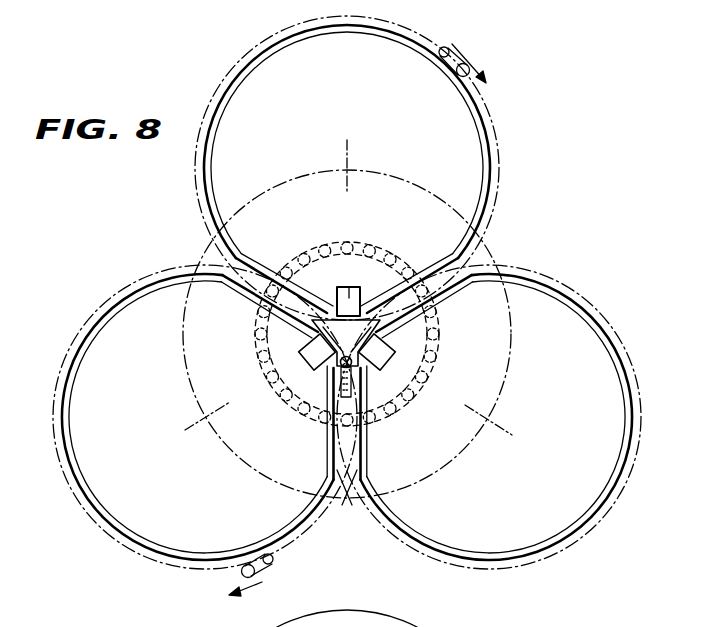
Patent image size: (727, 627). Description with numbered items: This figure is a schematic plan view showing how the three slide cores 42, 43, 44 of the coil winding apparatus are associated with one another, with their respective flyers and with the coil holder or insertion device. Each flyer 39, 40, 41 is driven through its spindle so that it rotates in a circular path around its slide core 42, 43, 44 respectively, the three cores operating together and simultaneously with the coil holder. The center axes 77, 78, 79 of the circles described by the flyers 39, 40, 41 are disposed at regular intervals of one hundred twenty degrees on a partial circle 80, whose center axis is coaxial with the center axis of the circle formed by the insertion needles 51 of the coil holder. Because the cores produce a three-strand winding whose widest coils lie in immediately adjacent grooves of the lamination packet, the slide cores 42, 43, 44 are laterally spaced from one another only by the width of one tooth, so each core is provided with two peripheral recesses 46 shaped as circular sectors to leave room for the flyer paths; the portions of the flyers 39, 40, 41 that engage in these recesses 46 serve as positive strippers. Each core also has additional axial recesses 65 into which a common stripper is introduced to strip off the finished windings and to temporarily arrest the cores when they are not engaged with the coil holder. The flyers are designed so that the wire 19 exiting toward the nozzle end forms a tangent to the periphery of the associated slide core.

The wire 19 is at (333, 450).
The flyer 39 is at (351, 380).
The flyer 40 is at (266, 564).
The flyer 41 is at (463, 64).
The slide core 42 is at (561, 314).
The slide core 43 is at (100, 307).
The slide core 44 is at (468, 156).
The peripheral recess 46 is at (442, 290).
The insertion needles 51 is at (363, 446).
The axial recess 65 is at (352, 290).
The center axis 77 is at (487, 420).
The center axis 78 is at (205, 416).
The center axis 79 is at (347, 173).
The partial circle 80 is at (283, 194).